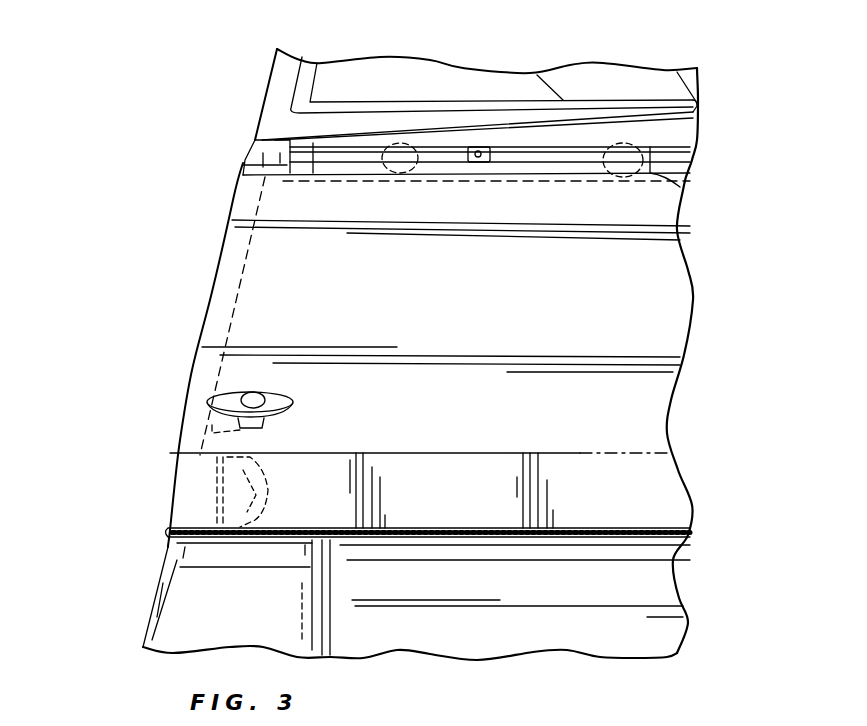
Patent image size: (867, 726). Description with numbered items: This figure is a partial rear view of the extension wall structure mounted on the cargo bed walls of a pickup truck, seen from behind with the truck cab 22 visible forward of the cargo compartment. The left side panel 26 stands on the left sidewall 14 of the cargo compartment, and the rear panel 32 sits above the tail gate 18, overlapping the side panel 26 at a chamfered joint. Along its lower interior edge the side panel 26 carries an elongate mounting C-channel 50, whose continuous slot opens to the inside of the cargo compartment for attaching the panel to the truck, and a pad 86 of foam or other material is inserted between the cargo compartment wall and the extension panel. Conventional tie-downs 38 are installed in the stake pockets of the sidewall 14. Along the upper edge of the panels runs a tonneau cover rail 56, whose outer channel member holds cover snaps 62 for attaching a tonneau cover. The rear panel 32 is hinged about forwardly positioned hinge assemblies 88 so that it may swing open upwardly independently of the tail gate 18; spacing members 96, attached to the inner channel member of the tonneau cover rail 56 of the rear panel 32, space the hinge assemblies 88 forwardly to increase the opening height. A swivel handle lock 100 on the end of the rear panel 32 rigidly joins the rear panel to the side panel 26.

The truck cab 22 is at (268, 75).
The tonneau cover rail 56 is at (327, 167).
The left side panel 26 is at (222, 250).
The swivel handle lock 100 is at (213, 395).
The tie-downs 38 is at (227, 467).
The mounting C-channel 50 is at (180, 487).
The left sidewall 14 is at (170, 552).
The pad 86 is at (637, 540).
The hinge assemblies 88 is at (683, 187).
The spacing members 96 is at (382, 188).
The cover snaps 62 is at (480, 162).
The rear panel 32 is at (500, 338).
The tail gate 18 is at (478, 598).